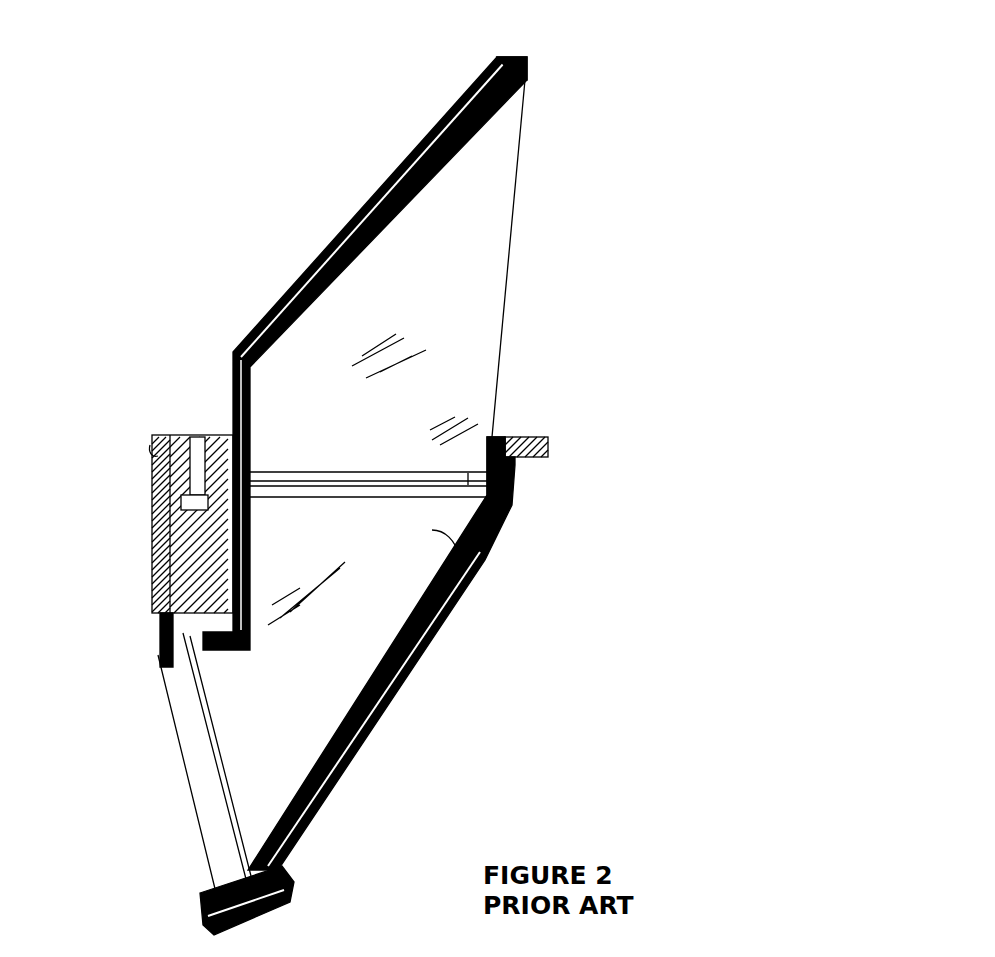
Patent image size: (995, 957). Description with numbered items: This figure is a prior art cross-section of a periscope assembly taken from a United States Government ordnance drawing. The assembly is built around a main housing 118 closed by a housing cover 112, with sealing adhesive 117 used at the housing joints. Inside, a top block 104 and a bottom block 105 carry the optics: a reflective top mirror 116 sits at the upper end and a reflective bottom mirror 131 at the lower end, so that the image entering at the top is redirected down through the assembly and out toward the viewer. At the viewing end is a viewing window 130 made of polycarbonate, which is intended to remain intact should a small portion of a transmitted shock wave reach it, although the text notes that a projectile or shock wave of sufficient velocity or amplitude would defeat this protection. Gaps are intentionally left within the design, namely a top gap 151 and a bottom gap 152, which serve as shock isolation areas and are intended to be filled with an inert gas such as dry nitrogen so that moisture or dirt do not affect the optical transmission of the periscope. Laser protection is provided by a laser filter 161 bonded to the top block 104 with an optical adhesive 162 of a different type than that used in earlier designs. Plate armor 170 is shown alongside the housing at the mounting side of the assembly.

The top block 104 is at (470, 317).
The bottom block 105 is at (362, 627).
The housing cover 112 is at (420, 148).
The reflective top mirror 116 is at (463, 140).
The sealing adhesive 117 is at (528, 68).
The main housing 118 is at (363, 713).
The viewing window 130 is at (193, 777).
The reflective bottom mirror 131 is at (425, 558).
The top gap 151 is at (515, 478).
The bottom gap 152 is at (193, 640).
The laser filter 161 is at (457, 473).
The optical adhesive 162 is at (408, 473).
The plate armor 170 is at (152, 538).